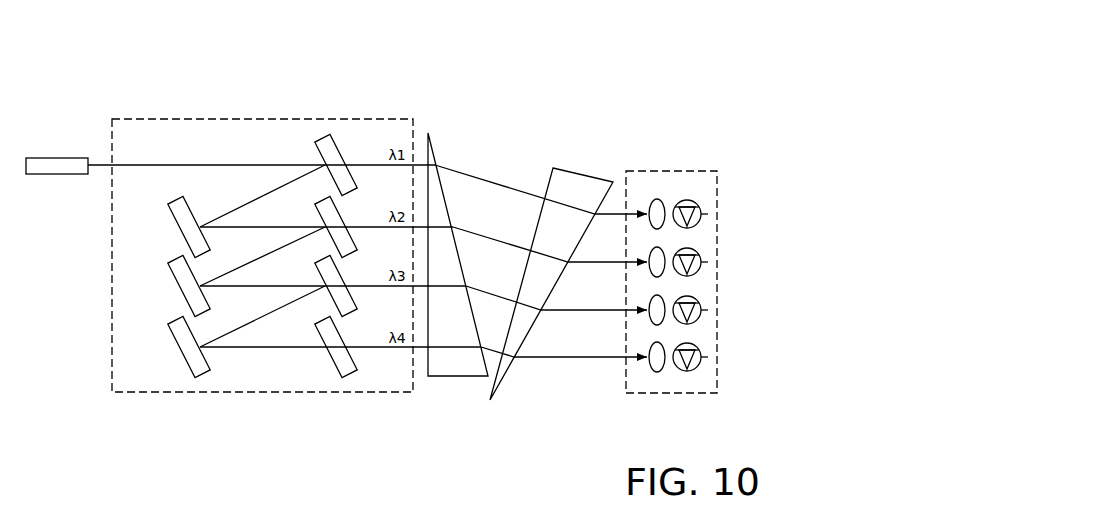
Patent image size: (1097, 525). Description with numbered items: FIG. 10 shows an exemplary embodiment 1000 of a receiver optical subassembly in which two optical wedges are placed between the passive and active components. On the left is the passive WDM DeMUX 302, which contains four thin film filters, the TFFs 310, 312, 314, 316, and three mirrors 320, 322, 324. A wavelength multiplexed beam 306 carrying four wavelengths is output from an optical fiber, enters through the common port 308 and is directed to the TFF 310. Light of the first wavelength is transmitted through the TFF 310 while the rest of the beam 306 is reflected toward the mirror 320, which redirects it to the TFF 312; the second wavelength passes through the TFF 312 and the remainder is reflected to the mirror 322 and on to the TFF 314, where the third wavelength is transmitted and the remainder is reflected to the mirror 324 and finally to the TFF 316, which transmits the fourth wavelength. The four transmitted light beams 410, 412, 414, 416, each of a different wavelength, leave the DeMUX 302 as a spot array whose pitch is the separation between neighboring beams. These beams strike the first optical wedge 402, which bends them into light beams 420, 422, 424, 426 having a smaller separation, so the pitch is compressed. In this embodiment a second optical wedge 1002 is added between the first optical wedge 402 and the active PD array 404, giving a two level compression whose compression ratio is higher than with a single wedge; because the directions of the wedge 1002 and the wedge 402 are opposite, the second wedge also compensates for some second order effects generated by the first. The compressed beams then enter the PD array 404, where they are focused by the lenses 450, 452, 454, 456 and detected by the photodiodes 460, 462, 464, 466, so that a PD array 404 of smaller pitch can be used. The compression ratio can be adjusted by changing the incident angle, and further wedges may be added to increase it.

The exemplary embodiment 1000 is at (162, 70).
The passive WDM DeMUX 302 is at (227, 119).
The common port 308 is at (47, 158).
The wavelength multiplexed beam 306 is at (150, 165).
The TFF 310 is at (316, 146).
The TFF 312 is at (316, 208).
The TFF 314 is at (316, 267).
The TFF 316 is at (316, 329).
The light beam 410 is at (353, 163).
The light beam 412 is at (353, 225).
The light beam 414 is at (353, 284).
The light beam 416 is at (353, 345).
The mirror 320 is at (168, 220).
The mirror 322 is at (168, 282).
The mirror 324 is at (168, 343).
The first optical wedge 402 is at (433, 150).
The light beam 420 is at (490, 181).
The light beam 422 is at (490, 233).
The light beam 424 is at (473, 283).
The light beam 426 is at (487, 340).
The second optical wedge 1002 is at (572, 168).
The active PD array 404 is at (680, 171).
The first lens 450 is at (652, 222).
The second lens 452 is at (652, 270).
The third lens 454 is at (652, 318).
The fourth lens 456 is at (652, 365).
The first photodetector 460 is at (708, 214).
The second photodetector 462 is at (708, 262).
The third photodetector 464 is at (708, 310).
The fourth photodetector 466 is at (708, 357).